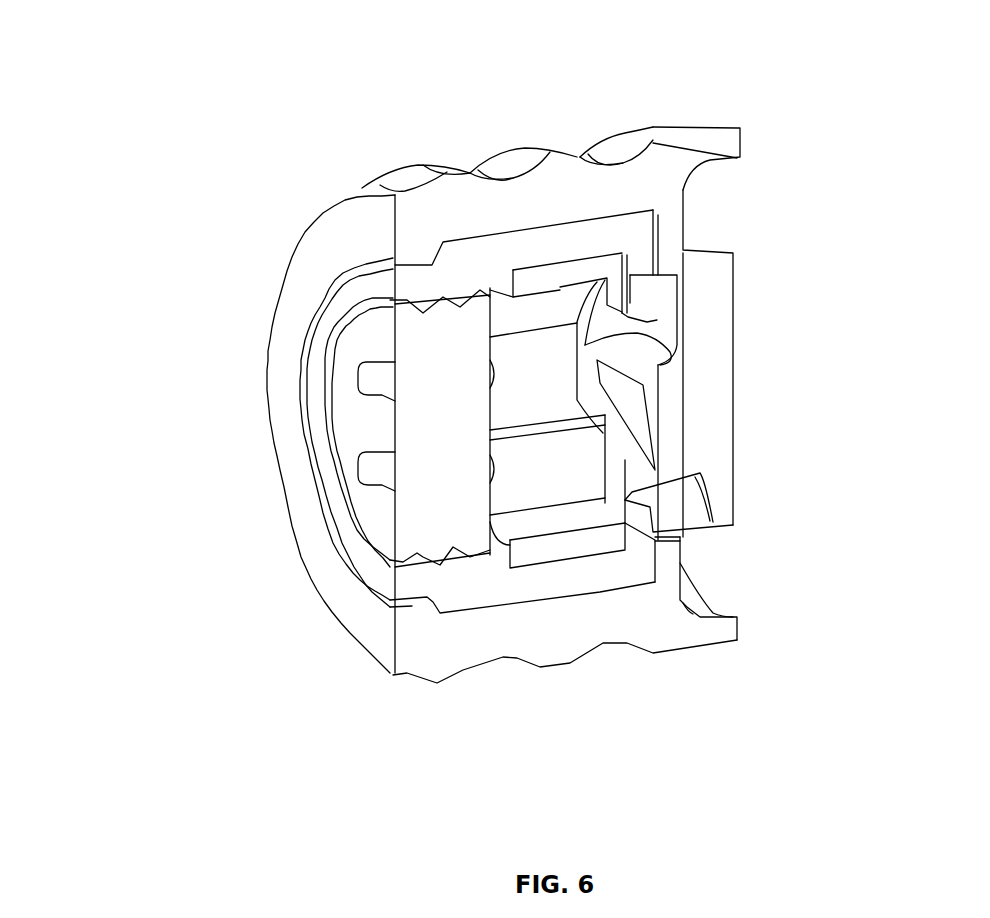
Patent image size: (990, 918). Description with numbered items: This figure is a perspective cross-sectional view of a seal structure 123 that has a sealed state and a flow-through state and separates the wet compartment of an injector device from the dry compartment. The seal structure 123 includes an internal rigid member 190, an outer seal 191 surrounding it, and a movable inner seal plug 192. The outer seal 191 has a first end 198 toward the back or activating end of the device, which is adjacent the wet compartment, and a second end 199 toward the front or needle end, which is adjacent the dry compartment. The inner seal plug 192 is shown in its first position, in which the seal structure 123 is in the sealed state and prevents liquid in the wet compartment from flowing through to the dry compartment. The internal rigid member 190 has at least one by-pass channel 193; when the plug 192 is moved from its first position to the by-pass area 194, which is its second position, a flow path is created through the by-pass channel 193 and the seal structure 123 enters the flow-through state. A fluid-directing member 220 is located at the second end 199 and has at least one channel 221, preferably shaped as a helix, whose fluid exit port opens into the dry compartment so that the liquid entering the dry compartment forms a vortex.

The seal structure 123 is at (518, 108).
The internal rigid member 190 is at (415, 283).
The outer seal 191 is at (548, 672).
The inner seal plug 192 is at (357, 427).
The by-pass channel 193 is at (537, 380).
The by-pass area 194 is at (546, 475).
The first end 198 is at (158, 333).
The second end 199 is at (835, 360).
The fluid-directing member 220 is at (708, 338).
The channel 221 is at (640, 312).